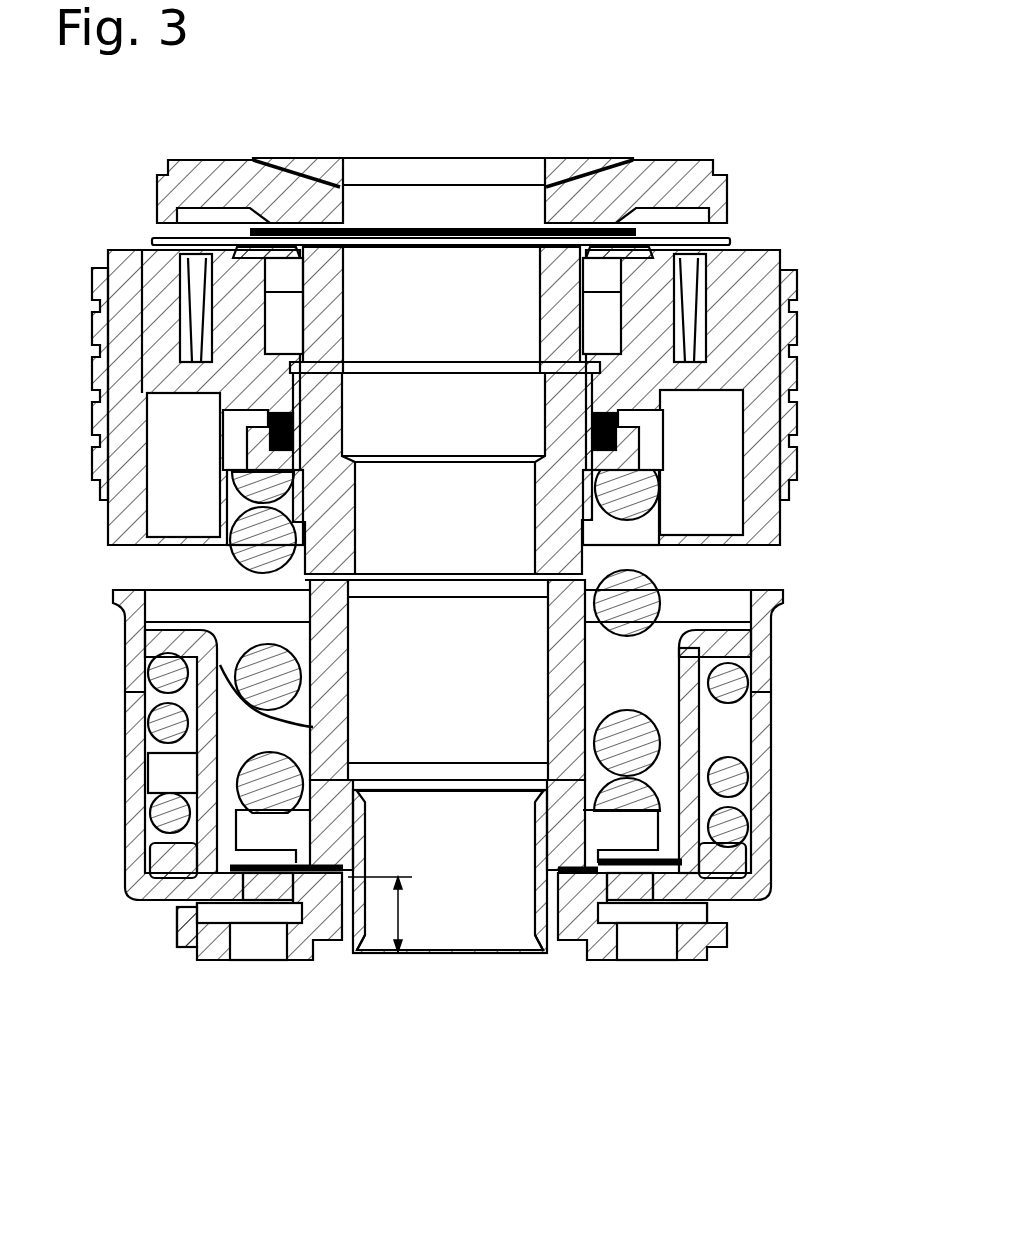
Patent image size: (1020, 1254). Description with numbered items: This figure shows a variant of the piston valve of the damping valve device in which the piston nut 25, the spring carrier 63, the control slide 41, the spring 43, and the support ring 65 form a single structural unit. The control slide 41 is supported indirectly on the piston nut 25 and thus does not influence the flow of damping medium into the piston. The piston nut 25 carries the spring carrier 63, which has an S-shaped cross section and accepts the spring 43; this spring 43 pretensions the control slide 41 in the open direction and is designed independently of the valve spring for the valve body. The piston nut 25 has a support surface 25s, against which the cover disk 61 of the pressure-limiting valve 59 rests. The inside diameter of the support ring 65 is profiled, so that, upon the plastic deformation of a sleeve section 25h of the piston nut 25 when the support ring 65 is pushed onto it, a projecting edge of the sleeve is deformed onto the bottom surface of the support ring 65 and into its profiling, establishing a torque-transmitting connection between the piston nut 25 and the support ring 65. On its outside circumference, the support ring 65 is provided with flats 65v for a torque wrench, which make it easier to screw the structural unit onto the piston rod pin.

The piston nut 25 is at (630, 834).
The sleeve section 25h is at (400, 900).
The support surface 25s is at (578, 860).
The control slide 41 is at (806, 864).
The spring 43 is at (723, 687).
The spring carrier 63 is at (733, 639).
The support ring 65 is at (727, 927).
The flats 65v is at (168, 934).
The cover disk 61 is at (622, 905).
The pressure-limiting valve 59 is at (258, 1032).